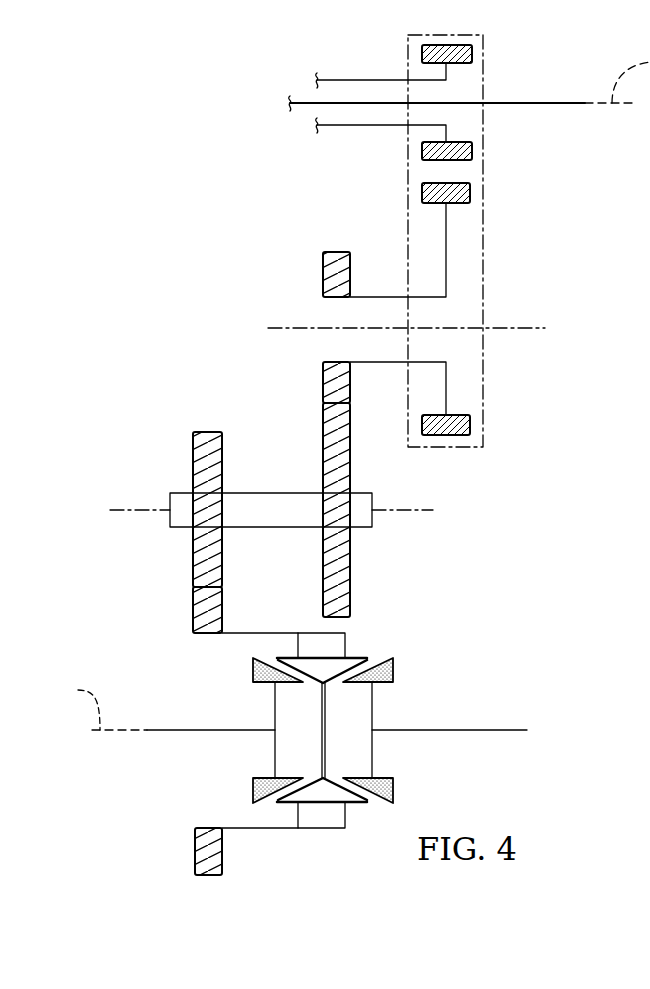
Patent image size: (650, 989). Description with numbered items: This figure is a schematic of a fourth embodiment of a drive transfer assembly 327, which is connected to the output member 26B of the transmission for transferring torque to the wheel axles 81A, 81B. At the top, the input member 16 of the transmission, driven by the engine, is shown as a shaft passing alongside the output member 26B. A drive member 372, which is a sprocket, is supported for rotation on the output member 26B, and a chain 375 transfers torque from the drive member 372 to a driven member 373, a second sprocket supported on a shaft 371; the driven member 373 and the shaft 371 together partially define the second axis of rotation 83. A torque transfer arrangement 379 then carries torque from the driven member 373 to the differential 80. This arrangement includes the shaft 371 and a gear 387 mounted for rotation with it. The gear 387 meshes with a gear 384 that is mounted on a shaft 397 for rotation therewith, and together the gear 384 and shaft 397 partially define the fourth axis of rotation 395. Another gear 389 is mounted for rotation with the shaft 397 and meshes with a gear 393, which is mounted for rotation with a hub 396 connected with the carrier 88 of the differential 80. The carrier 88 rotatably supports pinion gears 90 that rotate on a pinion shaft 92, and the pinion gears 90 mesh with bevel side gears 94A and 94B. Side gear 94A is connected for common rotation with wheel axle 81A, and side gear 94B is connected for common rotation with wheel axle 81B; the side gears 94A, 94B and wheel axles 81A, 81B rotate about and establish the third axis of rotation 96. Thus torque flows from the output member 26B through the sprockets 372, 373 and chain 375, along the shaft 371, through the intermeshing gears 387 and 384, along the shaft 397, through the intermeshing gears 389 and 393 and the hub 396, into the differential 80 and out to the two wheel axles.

The input member 16 is at (527, 103).
The output member 26B is at (363, 80).
The differential 80 is at (458, 640).
The wheel axle 81A is at (187, 730).
The wheel axle 81B is at (475, 730).
The second axis of rotation 83 is at (290, 328).
The carrier 88 is at (345, 648).
The pinion gears 90 is at (355, 807).
The pinion shaft 92 is at (325, 706).
The side gear 94A is at (265, 685).
The side gear 94B is at (380, 685).
The third axis of rotation 96 is at (76, 705).
The drive transfer assembly 327 is at (522, 288).
The shaft 371 is at (388, 297).
The drive member 372 is at (472, 52).
The driven member 373 is at (470, 193).
The chain 375 is at (483, 378).
The torque transfer arrangement 379 is at (553, 162).
The gear 384 is at (350, 568).
The gear 387 is at (323, 277).
The gear 389 is at (193, 465).
The gear 393 is at (193, 612).
The fourth axis of rotation 395 is at (130, 510).
The hub 396 is at (242, 633).
The shaft 397 is at (280, 493).